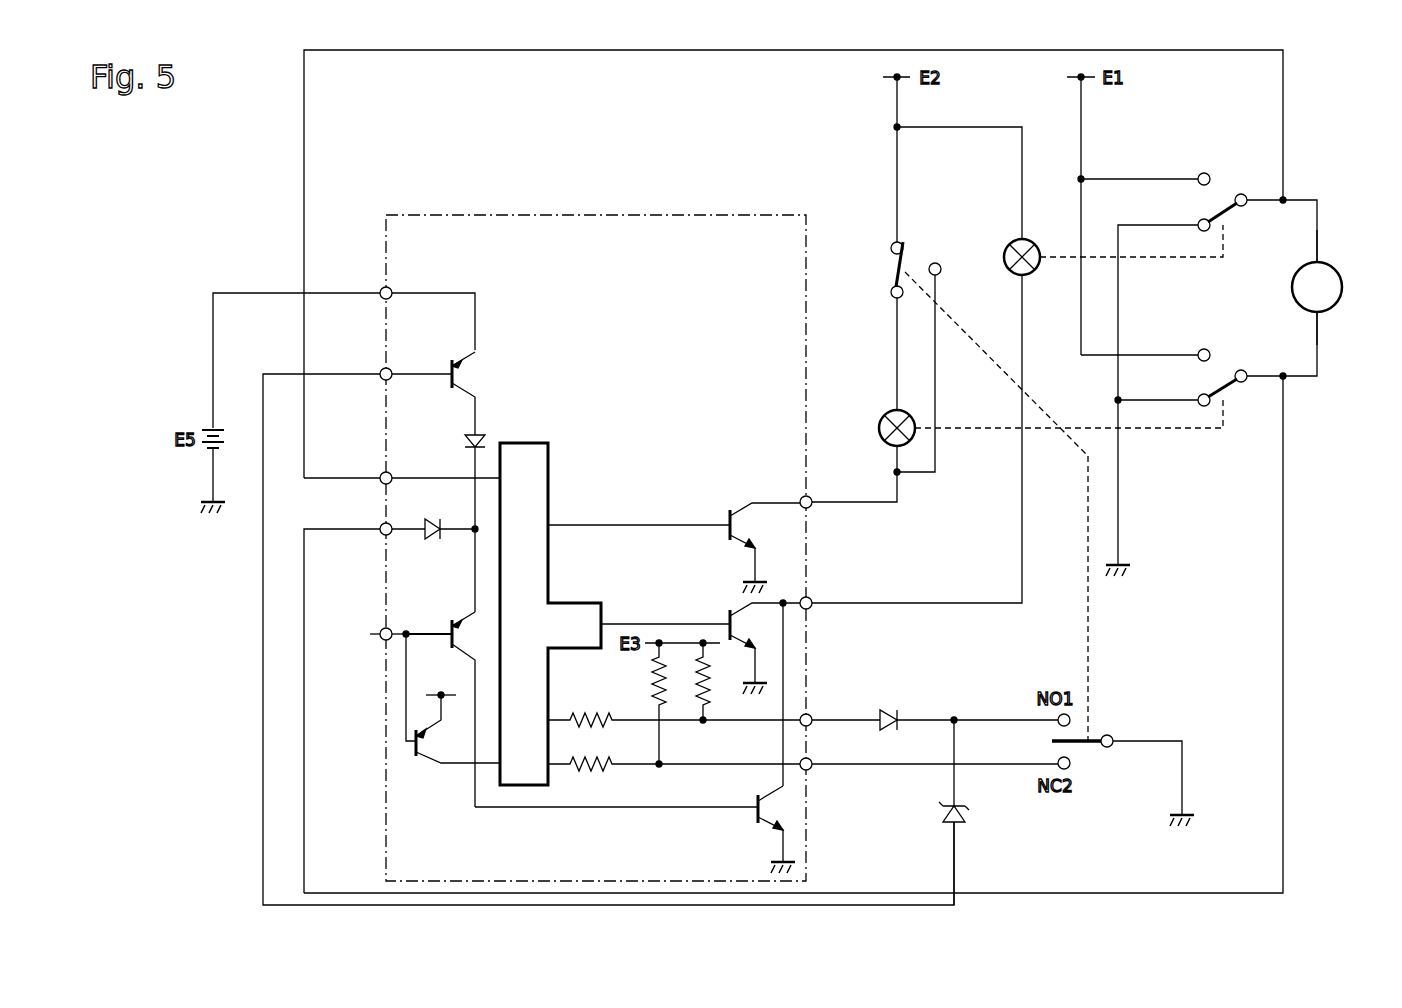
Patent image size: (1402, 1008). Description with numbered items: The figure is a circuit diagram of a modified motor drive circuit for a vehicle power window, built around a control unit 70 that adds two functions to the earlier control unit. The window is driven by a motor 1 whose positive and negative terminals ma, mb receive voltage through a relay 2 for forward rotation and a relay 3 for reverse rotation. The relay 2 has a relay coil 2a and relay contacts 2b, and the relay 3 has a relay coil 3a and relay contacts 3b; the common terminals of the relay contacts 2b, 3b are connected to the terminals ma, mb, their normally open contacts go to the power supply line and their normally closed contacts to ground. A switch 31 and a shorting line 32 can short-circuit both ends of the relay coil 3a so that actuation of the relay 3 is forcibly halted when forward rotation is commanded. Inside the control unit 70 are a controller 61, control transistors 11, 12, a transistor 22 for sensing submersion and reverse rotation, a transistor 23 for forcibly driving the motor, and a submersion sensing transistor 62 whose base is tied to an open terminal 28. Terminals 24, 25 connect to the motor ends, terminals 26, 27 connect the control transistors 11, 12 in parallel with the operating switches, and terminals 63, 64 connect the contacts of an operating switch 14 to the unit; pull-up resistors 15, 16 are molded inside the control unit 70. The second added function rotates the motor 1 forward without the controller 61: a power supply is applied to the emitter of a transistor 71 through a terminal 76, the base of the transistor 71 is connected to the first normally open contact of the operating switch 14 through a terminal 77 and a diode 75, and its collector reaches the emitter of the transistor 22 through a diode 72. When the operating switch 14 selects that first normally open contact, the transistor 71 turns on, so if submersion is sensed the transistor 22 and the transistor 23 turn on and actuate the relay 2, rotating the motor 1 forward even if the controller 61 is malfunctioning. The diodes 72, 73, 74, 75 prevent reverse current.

The motor 1 is at (1343, 287).
The positive terminal of motor ma is at (1325, 262).
The negative terminal of motor mb is at (1325, 312).
The relay 2 is at (1064, 363).
The relay coil 2a is at (1010, 243).
The relay contacts 2b is at (1222, 188).
The relay 3 is at (1064, 400).
The relay coil 3a is at (885, 415).
The relay contacts 3b is at (1222, 364).
The control transistor 11 is at (740, 605).
The control transistor 12 is at (745, 505).
The operating switch 14 is at (1094, 750).
The pull-up resistor 15 is at (708, 700).
The pull-up resistor 16 is at (652, 688).
The transistor 22 is at (452, 620).
The transistor 23 is at (762, 828).
The terminal 24 is at (381, 475).
The terminal 25 is at (381, 536).
The terminal 26 is at (811, 599).
The terminal 27 is at (801, 498).
The open terminal 28 is at (381, 640).
The switch 31 is at (915, 244).
The shorting line 32 is at (935, 452).
The controller 61 is at (525, 443).
The submersion sensing transistor 62 is at (440, 770).
The terminal 63 is at (811, 716).
The terminal 64 is at (811, 769).
The control unit 70 is at (568, 214).
The transistor 71 is at (452, 362).
The diode 72 is at (462, 440).
The diode 73 is at (438, 518).
The diode 74 is at (890, 708).
The diode 75 is at (966, 811).
The terminal 76 is at (381, 290).
The terminal 77 is at (381, 371).